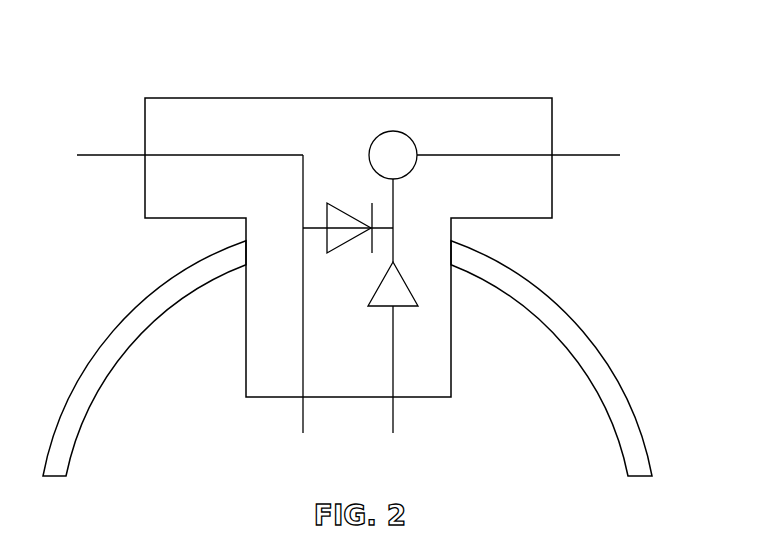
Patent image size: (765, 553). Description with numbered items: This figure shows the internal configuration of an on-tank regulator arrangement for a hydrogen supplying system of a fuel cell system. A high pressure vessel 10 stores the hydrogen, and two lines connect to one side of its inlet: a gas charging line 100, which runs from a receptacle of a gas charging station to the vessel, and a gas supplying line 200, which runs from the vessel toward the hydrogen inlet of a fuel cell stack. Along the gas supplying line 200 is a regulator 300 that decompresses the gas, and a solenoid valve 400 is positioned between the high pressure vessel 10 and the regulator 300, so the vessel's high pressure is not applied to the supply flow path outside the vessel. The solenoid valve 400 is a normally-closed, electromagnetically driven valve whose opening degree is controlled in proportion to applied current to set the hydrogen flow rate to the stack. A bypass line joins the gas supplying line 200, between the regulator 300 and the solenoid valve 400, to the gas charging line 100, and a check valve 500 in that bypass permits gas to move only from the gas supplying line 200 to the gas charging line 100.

The high pressure vessel 10 is at (574, 426).
The gas charging line 100 is at (102, 150).
The gas supplying line 200 is at (591, 150).
The regulator 300 is at (408, 125).
The solenoid valve 400 is at (423, 291).
The check valve 500 is at (345, 203).